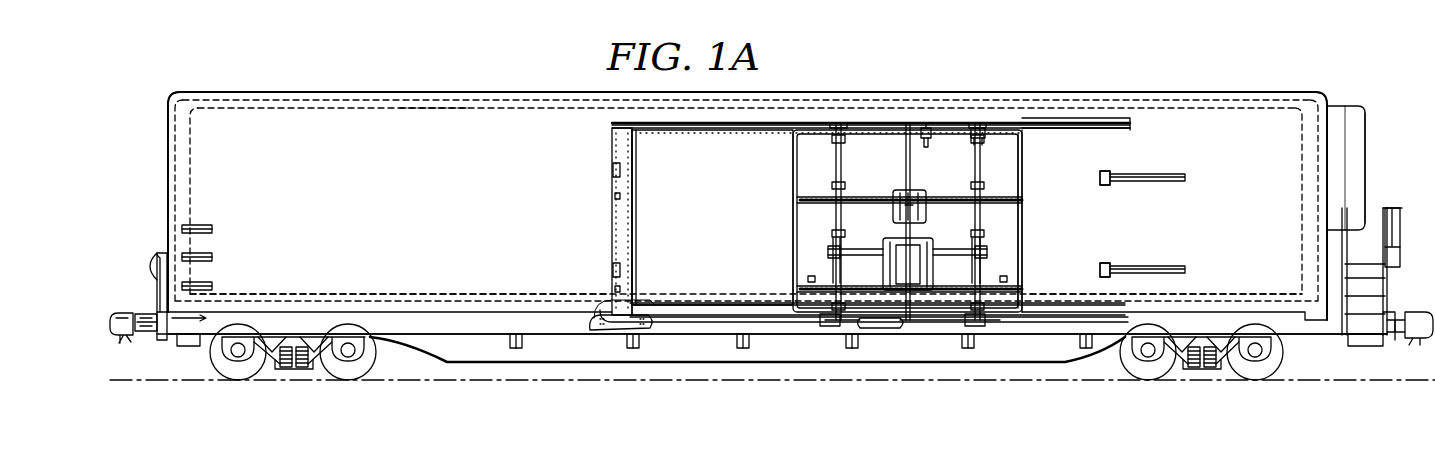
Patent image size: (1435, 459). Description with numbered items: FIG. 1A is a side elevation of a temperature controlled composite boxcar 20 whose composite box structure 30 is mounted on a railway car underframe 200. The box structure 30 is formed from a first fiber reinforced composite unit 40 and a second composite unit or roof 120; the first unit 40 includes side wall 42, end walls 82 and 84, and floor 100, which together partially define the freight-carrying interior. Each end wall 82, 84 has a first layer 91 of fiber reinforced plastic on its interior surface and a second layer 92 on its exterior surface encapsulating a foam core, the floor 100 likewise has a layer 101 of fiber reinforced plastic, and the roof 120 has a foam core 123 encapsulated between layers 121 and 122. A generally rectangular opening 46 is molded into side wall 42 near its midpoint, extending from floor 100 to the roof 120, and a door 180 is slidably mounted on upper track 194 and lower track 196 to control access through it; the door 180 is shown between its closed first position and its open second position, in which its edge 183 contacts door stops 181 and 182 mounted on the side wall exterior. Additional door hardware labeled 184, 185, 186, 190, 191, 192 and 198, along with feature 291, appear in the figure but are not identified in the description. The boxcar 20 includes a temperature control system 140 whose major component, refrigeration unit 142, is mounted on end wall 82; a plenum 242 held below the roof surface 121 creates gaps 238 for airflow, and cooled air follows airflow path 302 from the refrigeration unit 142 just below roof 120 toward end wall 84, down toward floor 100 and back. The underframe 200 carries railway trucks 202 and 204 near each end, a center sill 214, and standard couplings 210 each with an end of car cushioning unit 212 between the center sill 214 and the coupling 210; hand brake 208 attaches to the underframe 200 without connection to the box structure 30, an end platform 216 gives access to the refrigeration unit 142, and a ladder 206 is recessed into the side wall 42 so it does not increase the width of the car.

The temperature controlled composite boxcar 20 is at (1245, 60).
The composite box structure 30 is at (1060, 86).
The first fiber reinforced composite unit 40 is at (870, 86).
The side wall 42 is at (338, 122).
The opening 46 is at (714, 263).
The end wall 82 is at (1330, 100).
The end wall 84 is at (163, 106).
The first layer of fiber reinforced plastic 91 is at (185, 163).
The second layer of fiber reinforced plastic 92 is at (168, 175).
The floor 100 is at (395, 297).
The layer of fiber reinforced plastic 101 is at (1218, 298).
The roof 120 is at (505, 88).
The layer of fiber reinforced plastic 121 is at (432, 110).
The layer of fiber reinforced plastic 122 is at (437, 95).
The foam core 123 is at (393, 95).
The temperature control system 140 is at (1362, 78).
The refrigeration unit 142 is at (1370, 138).
The door 180 is at (855, 172).
The door stop 181 is at (1170, 175).
The door stop 182 is at (1170, 262).
The edge of door 183 is at (1025, 218).
The bar bracket 184 is at (1100, 178).
The hinge 185 is at (608, 170).
The hinge 186 is at (608, 272).
The door post 190 is at (630, 252).
The door frame 191 is at (630, 162).
The door header 192 is at (718, 137).
The upper track 194 is at (1110, 120).
The lower track 196 is at (1060, 334).
The lower door track 198 is at (678, 320).
The railway car underframe 200 is at (930, 367).
The railway truck 202 is at (1207, 371).
The railway truck 204 is at (290, 370).
The ladder 206 is at (205, 225).
The hand brake 208 is at (147, 255).
The railway coupling 210 is at (120, 342).
The end of car cushioning unit 212 is at (145, 332).
The center sill 214 is at (1033, 352).
The end platform 216 is at (1390, 350).
The gaps 238 is at (1000, 105).
The plenum 242 is at (950, 112).
The bracket 291 is at (612, 330).
The airflow path 302 is at (832, 104).